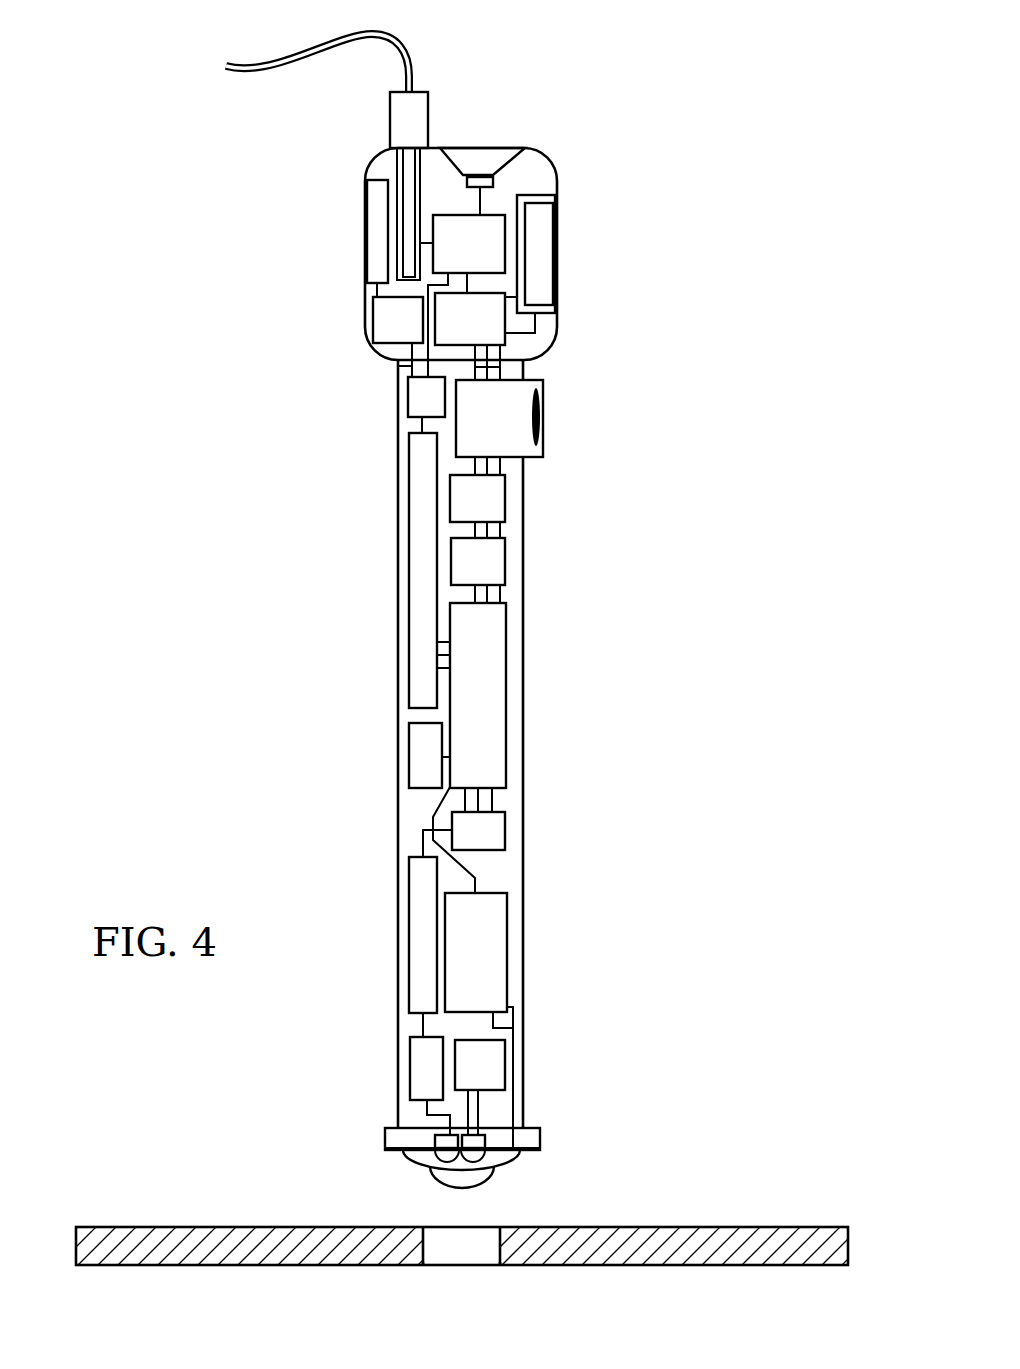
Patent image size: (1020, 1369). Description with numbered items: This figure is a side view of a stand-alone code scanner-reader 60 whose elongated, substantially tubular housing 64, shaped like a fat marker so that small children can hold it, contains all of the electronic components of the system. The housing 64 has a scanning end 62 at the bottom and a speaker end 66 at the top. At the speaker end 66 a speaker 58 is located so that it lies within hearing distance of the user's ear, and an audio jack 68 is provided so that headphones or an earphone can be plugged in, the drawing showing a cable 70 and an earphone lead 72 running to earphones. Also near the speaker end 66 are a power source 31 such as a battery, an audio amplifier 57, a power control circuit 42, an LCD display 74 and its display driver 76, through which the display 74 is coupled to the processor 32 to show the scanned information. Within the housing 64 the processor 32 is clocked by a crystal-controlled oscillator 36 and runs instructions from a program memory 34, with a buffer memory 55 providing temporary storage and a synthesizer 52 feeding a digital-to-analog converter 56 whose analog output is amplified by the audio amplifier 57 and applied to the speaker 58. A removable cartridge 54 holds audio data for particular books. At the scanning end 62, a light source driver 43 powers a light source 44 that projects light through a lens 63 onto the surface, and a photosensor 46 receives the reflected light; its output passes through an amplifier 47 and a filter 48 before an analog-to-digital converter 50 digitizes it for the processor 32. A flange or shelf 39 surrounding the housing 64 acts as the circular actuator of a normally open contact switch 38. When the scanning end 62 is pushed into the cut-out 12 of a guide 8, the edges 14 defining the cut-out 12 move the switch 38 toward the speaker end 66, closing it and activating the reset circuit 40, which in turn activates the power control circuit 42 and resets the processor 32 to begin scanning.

The guide 8 is at (267, 1227).
The cut-out 12 is at (467, 1242).
The edges 14 is at (427, 1257).
The power source 31 is at (555, 217).
The processor 32 is at (506, 688).
The program memory 34 is at (505, 495).
The crystal-controlled oscillator 36 is at (409, 752).
The momentary contact switch 38 is at (516, 1157).
The flange or shelf 39 is at (385, 1135).
The reset circuit 40 is at (507, 930).
The power control circuit 42 is at (503, 340).
The light source driver 43 is at (493, 1092).
The light source 44 is at (487, 1165).
The photosensor 46 is at (428, 1167).
The amplifier 47 is at (410, 1055).
The filter 48 is at (409, 908).
The analog-to-digital converter 50 is at (505, 830).
The synthesizer 52 is at (409, 467).
The removable cartridge 54 is at (543, 395).
The buffer memory 55 is at (505, 557).
The digital-to-analog converter 56 is at (408, 392).
The audio amplifier 57 is at (497, 217).
The speaker 58 is at (508, 165).
The code scanner-reader 60 is at (232, 581).
The scanning end 62 is at (562, 1129).
The lens 63 is at (445, 1186).
The housing 64 is at (398, 795).
The speaker end 66 is at (580, 184).
The audio jack 68 is at (420, 185).
The earphone cable 70 is at (398, 33).
The earphone lead 72 is at (218, 42).
The display 74 is at (370, 180).
The display driver 76 is at (373, 310).